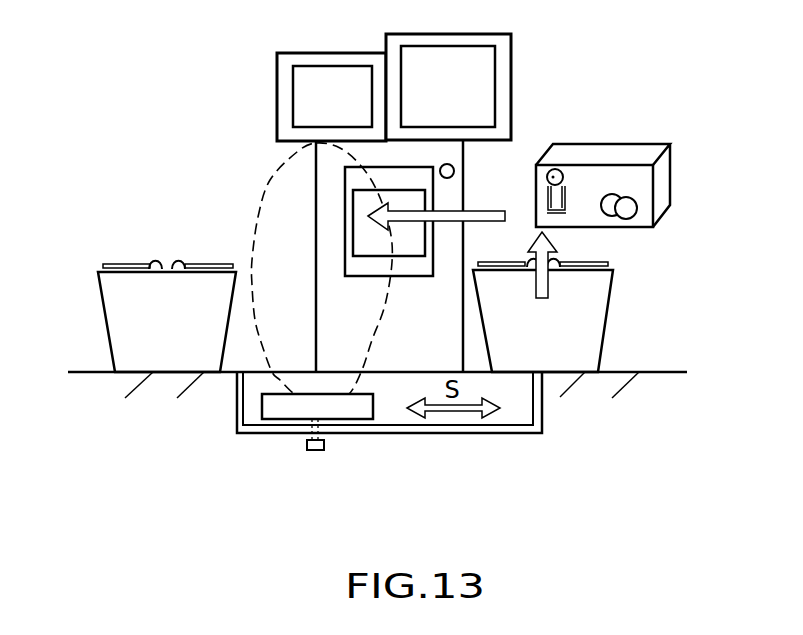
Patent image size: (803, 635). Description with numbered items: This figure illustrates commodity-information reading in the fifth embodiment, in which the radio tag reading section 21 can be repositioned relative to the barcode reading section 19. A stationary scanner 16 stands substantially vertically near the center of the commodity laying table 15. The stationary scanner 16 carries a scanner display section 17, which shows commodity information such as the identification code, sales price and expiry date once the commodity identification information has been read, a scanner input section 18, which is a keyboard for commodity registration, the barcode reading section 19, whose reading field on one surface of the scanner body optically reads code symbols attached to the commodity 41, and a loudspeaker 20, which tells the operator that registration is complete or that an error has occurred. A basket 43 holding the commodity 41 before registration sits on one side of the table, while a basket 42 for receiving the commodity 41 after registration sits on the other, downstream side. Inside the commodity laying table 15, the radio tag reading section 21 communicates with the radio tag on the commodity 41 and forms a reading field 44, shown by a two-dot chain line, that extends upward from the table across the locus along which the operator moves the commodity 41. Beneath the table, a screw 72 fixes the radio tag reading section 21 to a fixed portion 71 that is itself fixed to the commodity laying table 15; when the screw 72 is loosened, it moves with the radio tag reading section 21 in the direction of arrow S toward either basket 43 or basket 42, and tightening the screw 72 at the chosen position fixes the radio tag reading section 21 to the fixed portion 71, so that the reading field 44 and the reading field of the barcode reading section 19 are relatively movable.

The commodity laying table 15 is at (667, 371).
The stationary scanner 16 is at (315, 238).
The scanner display section 17 is at (305, 98).
The scanner input section 18 is at (485, 59).
The barcode reading section 19 is at (367, 206).
The loudspeaker 20 is at (462, 162).
The radio tag reading section 21 is at (363, 416).
The commodity 41 is at (637, 143).
The basket 42 is at (110, 305).
The basket 43 is at (610, 305).
The reading field 44 is at (252, 246).
The fixed portion 71 is at (544, 428).
The screw 72 is at (307, 445).